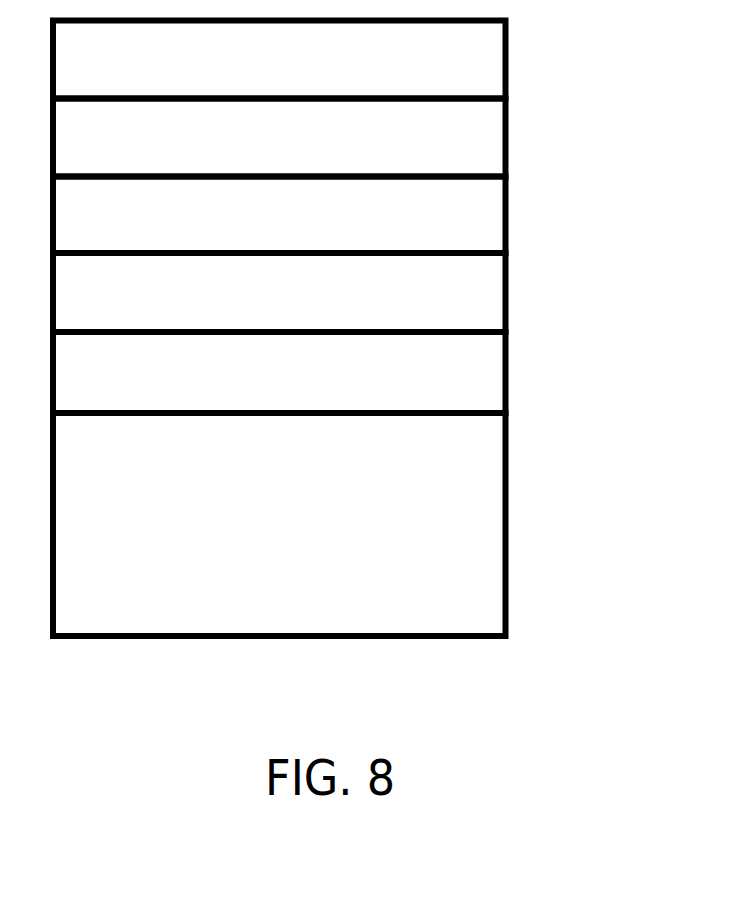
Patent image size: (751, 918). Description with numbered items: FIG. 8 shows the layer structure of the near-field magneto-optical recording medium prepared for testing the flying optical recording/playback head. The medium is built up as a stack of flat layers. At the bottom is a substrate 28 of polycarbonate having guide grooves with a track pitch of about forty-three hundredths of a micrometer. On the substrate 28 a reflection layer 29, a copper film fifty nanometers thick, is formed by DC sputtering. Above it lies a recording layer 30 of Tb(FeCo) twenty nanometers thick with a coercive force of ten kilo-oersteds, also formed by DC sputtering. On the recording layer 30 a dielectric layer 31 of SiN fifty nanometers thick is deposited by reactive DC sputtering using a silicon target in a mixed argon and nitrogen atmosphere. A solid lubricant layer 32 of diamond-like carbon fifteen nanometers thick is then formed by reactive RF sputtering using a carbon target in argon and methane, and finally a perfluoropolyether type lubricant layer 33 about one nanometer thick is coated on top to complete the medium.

The substrate 28 is at (455, 516).
The reflection layer 29 is at (455, 372).
The recording layer 30 is at (455, 306).
The dielectric layer 31 is at (455, 226).
The solid lubricant layer 32 is at (455, 135).
The lubricant layer 33 is at (455, 56).